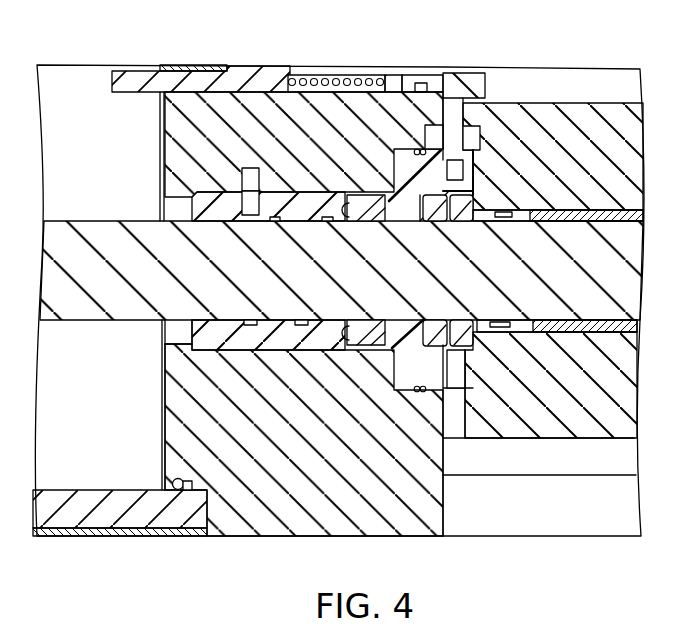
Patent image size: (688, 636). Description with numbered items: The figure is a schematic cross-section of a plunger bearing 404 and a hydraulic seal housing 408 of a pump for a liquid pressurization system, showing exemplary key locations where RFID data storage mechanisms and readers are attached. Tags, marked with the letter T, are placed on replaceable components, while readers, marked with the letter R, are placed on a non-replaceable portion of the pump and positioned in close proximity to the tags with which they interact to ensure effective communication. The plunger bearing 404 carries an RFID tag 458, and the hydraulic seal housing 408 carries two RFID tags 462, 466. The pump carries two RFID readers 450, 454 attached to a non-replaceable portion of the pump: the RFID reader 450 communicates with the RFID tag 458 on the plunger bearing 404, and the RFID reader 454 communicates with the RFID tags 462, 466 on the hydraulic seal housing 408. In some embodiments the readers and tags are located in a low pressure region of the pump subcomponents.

The plunger bearing 404 is at (275, 340).
The hydraulic seal housing 408 is at (402, 377).
The RFID reader 450 is at (246, 166).
The RFID reader 454 is at (422, 124).
The RFID tag 458 is at (250, 217).
The RFID tag 462 is at (475, 166).
The RFID tag 466 is at (481, 138).